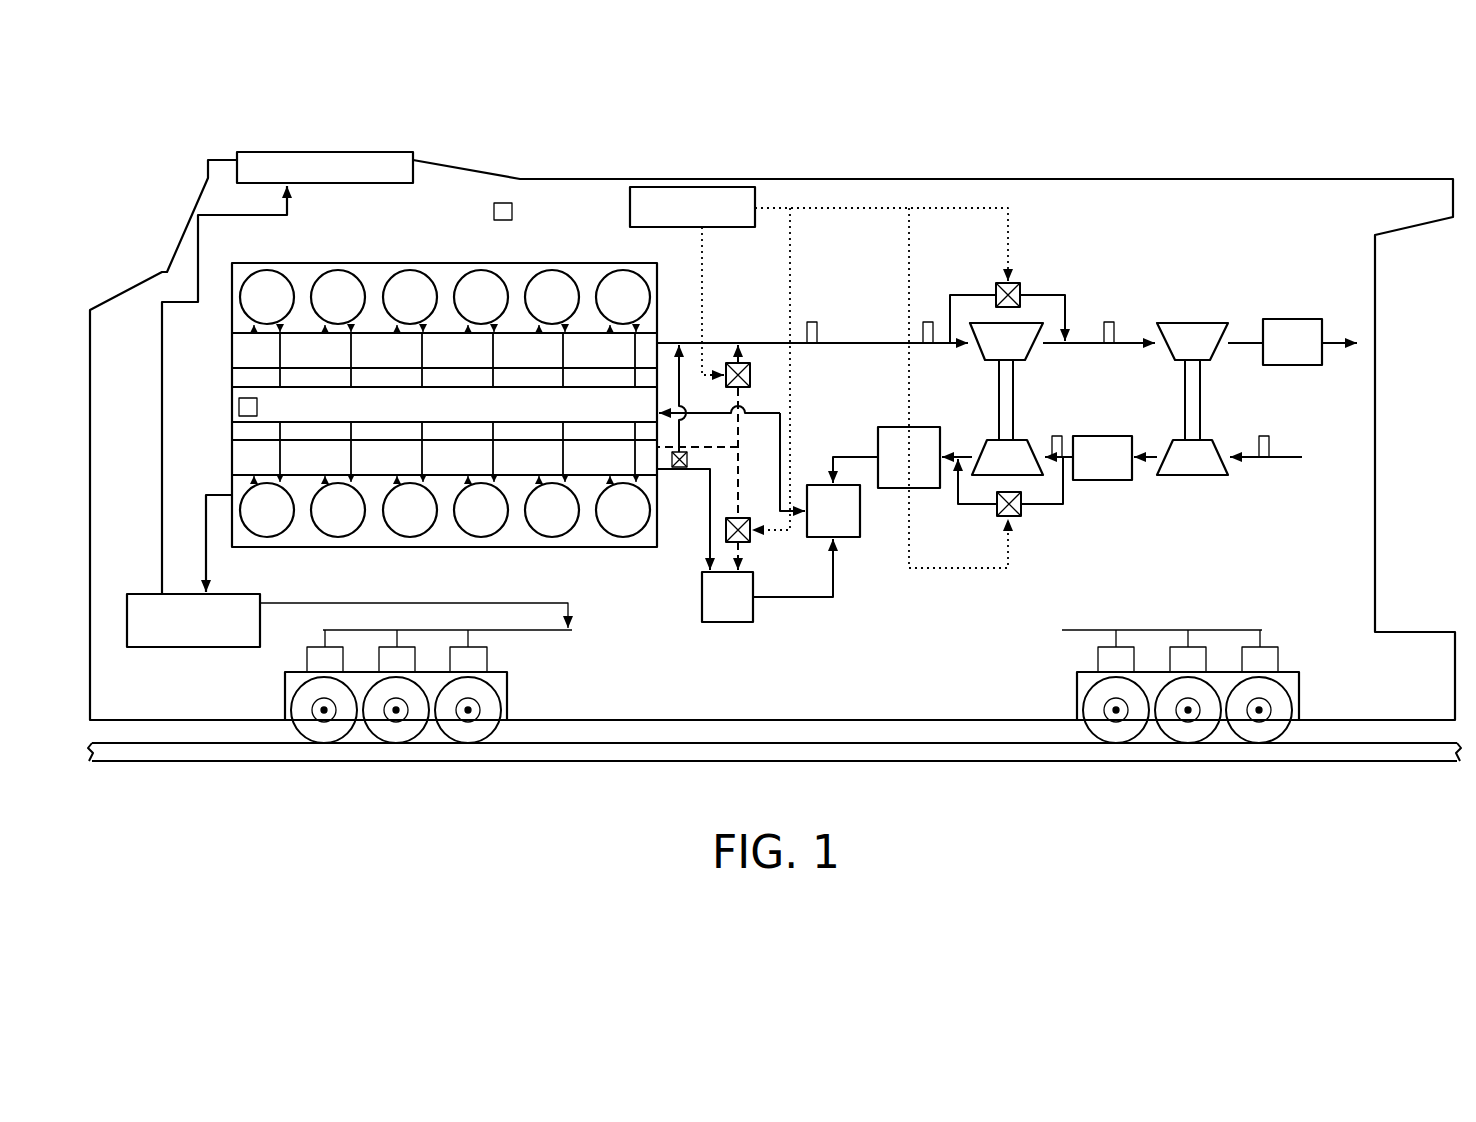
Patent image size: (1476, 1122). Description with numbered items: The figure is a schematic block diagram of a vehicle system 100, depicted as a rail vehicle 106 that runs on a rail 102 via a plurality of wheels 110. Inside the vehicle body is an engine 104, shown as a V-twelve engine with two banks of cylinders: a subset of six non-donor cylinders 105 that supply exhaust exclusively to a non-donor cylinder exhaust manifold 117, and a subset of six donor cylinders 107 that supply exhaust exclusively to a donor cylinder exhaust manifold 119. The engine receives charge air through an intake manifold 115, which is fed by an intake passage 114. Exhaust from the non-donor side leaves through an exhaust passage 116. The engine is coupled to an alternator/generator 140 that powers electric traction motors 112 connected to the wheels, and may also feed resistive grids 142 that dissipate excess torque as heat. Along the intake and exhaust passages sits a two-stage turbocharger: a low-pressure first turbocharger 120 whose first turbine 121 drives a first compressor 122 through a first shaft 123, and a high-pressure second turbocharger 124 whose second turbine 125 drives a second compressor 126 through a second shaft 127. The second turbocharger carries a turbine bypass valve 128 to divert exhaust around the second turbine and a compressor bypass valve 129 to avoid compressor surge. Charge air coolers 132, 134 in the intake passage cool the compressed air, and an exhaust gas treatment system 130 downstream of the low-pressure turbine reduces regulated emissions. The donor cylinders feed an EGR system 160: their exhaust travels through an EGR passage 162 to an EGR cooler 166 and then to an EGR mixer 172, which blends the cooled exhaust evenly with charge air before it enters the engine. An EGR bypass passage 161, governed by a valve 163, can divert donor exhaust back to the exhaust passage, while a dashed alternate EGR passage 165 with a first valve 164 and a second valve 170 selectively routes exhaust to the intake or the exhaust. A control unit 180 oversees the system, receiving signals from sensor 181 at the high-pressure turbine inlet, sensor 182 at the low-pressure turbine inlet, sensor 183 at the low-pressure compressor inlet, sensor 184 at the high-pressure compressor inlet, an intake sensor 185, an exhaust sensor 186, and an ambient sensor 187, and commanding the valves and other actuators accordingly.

The vehicle system 100 is at (1273, 150).
The rail 102 is at (1372, 761).
The engine 104 is at (548, 252).
The non-donor cylinders 105 is at (410, 270).
The rail vehicle 106 is at (1117, 179).
The donor cylinders 107 is at (412, 537).
The wheels 110 is at (500, 705).
The electric traction motors 112 is at (490, 663).
The intake passage 114 is at (1262, 457).
The intake manifold 115 is at (426, 417).
The exhaust passage 116 is at (835, 343).
The non-donor cylinder exhaust manifold 117 is at (232, 352).
The donor cylinder exhaust manifold 119 is at (232, 458).
The first turbocharger 120 is at (1196, 493).
The first turbine 121 is at (1175, 354).
The first compressor 122 is at (1175, 469).
The first shaft 123 is at (1201, 419).
The second turbocharger 124 is at (1043, 511).
The second turbine 125 is at (989, 354).
The second compressor 126 is at (990, 469).
The second shaft 127 is at (1014, 416).
The turbine bypass valve 128 is at (1021, 290).
The compressor bypass valve 129 is at (997, 509).
The exhaust gas treatment system 130 is at (1275, 354).
The charge air cooler 132 is at (1085, 470).
The charge air cooler 134 is at (892, 469).
The alternator/generator 140 is at (176, 634).
The resistive grids 142 is at (410, 152).
The EGR system 160 is at (857, 587).
The EGR bypass passage 161 is at (681, 372).
The EGR passage 162 is at (708, 503).
The valve 163 is at (686, 453).
The first valve 164 is at (750, 376).
The alternate EGR passage 165 is at (740, 456).
The EGR cooler 166 is at (710, 609).
The second valve 170 is at (748, 542).
The EGR mixer 172 is at (816, 523).
The control unit 180 is at (675, 219).
The sensor 181 is at (928, 322).
The sensor 182 is at (1109, 322).
The sensor 183 is at (1264, 436).
The sensor 184 is at (1057, 436).
The intake sensor 185 is at (239, 408).
The exhaust sensor 186 is at (812, 322).
The ambient sensor 187 is at (494, 212).